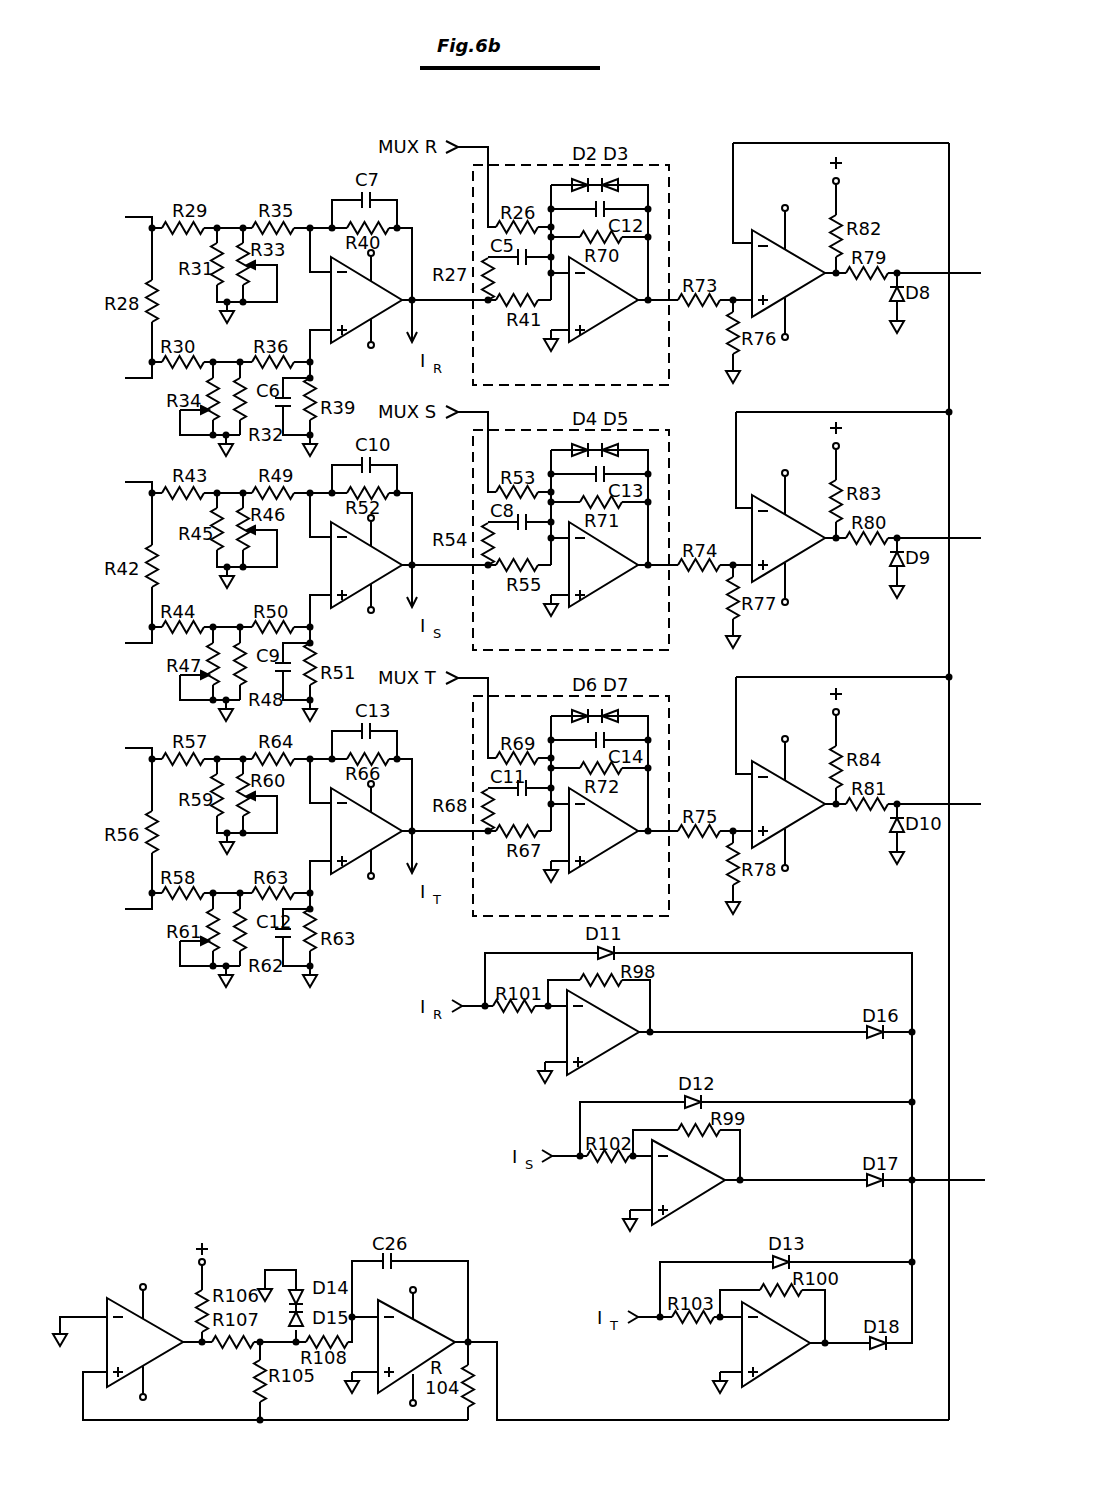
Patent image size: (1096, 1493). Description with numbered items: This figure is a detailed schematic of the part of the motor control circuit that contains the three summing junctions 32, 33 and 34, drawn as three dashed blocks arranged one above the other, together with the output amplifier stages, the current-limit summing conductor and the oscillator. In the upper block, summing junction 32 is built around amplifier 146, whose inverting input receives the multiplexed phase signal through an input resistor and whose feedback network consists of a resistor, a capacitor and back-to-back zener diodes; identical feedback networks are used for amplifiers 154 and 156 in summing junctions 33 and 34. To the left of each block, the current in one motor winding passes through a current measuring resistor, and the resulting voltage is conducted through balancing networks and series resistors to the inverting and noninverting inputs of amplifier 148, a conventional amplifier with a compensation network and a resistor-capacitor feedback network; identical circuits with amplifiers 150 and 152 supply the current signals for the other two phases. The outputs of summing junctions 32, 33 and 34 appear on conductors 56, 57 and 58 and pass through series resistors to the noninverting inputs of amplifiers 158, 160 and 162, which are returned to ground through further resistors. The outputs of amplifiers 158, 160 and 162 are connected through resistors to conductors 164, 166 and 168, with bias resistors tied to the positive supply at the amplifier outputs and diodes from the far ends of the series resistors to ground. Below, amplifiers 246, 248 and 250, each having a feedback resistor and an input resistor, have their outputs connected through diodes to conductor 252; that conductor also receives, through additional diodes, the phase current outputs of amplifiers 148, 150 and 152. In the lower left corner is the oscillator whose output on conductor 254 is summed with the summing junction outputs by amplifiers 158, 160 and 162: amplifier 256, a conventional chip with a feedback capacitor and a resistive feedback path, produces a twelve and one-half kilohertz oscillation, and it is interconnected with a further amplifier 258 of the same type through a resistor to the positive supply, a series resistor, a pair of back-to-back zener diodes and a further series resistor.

The summing junction 32 is at (650, 165).
The summing junction 33 is at (650, 430).
The summing junction 34 is at (650, 696).
The conductor 56 is at (673, 294).
The conductor 57 is at (673, 559).
The conductor 58 is at (673, 825).
The amplifier 146 is at (614, 313).
The amplifier 148 is at (378, 313).
The amplifier 150 is at (378, 578).
The amplifier 152 is at (378, 844).
The amplifier 154 is at (614, 578).
The amplifier 156 is at (614, 844).
The amplifier 158 is at (799, 288).
The amplifier 160 is at (799, 553).
The amplifier 162 is at (799, 819).
The conductor 164 is at (967, 271).
The conductor 166 is at (967, 536).
The conductor 168 is at (967, 802).
The amplifier 246 is at (609, 1046).
The amplifier 248 is at (694, 1196).
The amplifier 250 is at (782, 1356).
The conductor 252 is at (968, 1178).
The conductor 254 is at (485, 1342).
The amplifier 256 is at (419, 1354).
The amplifier 258 is at (147, 1356).